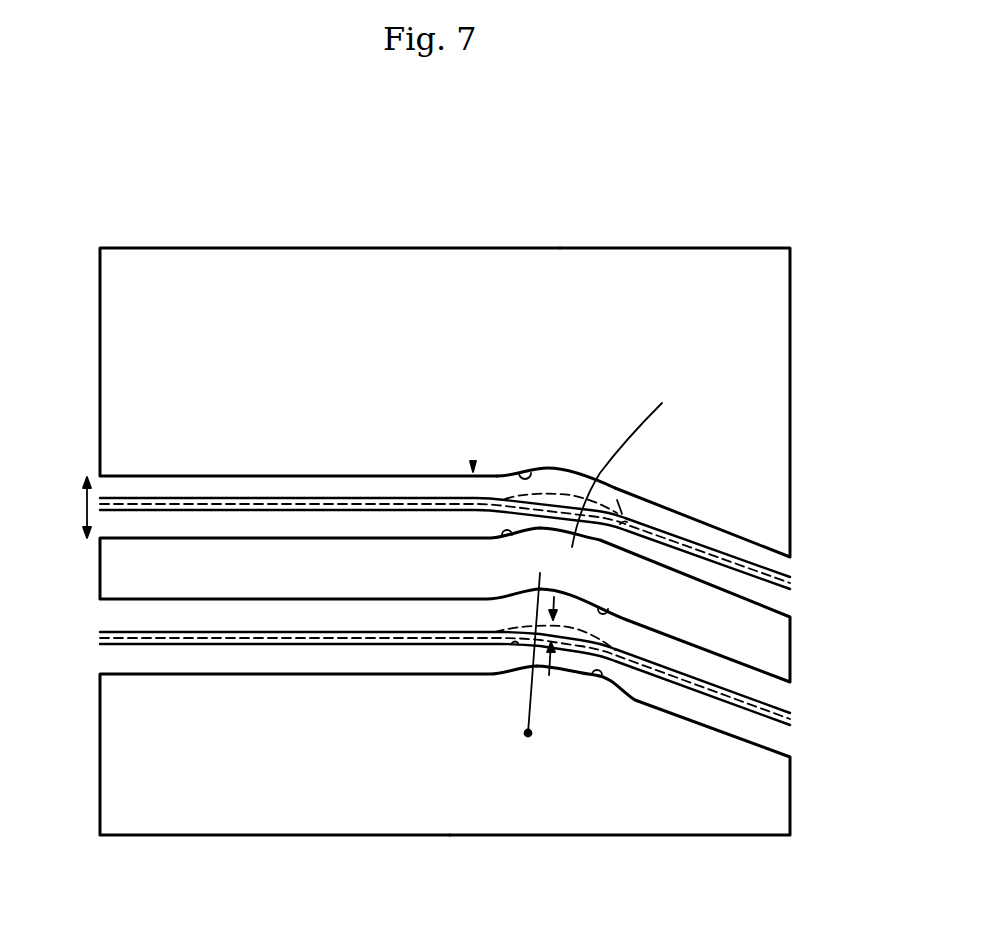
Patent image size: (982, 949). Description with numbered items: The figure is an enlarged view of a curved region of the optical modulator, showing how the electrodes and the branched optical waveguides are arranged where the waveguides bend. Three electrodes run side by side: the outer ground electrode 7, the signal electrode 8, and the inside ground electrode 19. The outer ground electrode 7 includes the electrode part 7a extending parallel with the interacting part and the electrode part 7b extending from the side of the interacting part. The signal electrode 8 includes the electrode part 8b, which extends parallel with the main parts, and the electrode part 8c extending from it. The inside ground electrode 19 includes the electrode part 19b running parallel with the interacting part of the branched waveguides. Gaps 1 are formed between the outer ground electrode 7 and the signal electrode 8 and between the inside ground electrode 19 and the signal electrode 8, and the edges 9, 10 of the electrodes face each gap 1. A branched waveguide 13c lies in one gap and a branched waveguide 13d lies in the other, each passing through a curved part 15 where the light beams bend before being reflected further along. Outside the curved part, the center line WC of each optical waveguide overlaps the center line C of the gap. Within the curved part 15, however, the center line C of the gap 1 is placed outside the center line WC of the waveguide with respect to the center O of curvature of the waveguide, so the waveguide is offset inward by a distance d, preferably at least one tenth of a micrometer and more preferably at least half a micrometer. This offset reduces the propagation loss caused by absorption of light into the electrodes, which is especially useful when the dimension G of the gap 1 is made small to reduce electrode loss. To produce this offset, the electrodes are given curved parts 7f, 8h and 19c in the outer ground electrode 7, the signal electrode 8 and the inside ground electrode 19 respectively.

The outer ground electrode 7 is at (445, 376).
The electrode part 7a is at (360, 278).
The electrode part 7b is at (733, 278).
The curved part 7f is at (573, 500).
The signal electrode 8 is at (445, 549).
The electrode part 8b is at (330, 550).
The electrode part 8c is at (707, 613).
The curved part 8h is at (617, 500).
The inside ground electrode 19 is at (445, 778).
The electrode part 19b is at (345, 815).
The curved part 19c is at (565, 672).
The branched waveguide 13c is at (247, 500).
The branched waveguide 13d is at (242, 633).
The curved part 15 is at (558, 510).
The edge of electrode 10 is at (520, 466).
The edge of electrode 9 is at (508, 532).
The gap 1 is at (473, 470).
The center line of gap C is at (599, 554).
The center of curvature O is at (521, 749).
The distance d is at (540, 628).
The center line of optical waveguide WC is at (620, 524).
The dimension of gap G is at (74, 507).